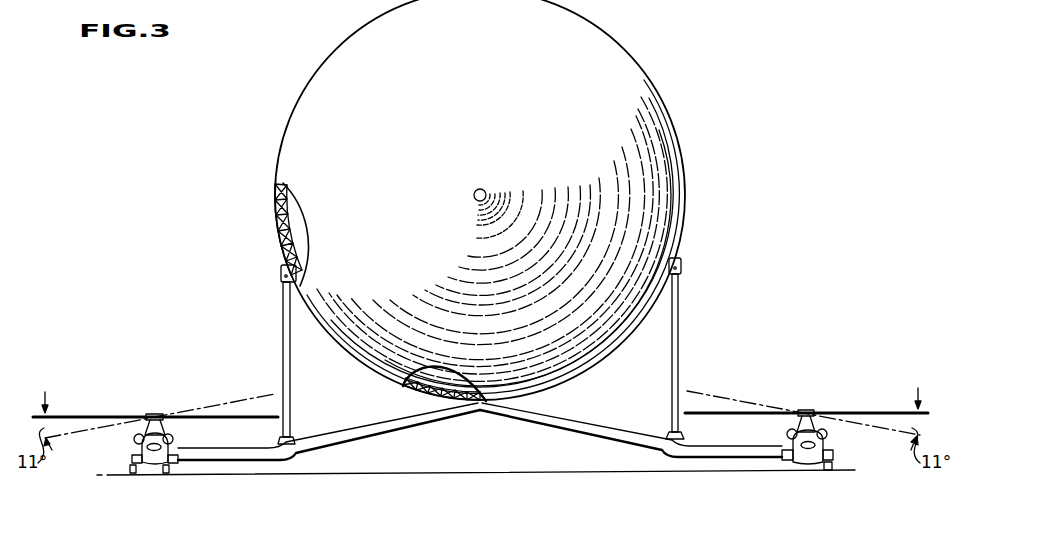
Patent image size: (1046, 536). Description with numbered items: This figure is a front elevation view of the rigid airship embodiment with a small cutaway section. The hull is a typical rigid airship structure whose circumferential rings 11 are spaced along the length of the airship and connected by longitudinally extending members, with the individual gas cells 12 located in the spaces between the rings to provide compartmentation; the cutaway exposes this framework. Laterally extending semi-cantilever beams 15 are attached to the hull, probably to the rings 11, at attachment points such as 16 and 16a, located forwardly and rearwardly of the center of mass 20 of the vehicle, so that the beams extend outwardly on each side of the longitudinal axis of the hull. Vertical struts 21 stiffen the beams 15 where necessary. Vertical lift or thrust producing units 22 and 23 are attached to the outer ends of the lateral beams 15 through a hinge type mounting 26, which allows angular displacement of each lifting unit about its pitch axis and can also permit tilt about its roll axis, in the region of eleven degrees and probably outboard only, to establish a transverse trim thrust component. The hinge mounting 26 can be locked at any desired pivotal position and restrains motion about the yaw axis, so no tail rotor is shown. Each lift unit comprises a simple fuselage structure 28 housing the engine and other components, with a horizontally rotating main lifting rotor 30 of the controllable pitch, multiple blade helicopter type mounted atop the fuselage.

The circumferential rings 11 is at (277, 197).
The gas cells 12 is at (300, 233).
The semi-cantilever beams 15 is at (358, 431).
The attachment point 16 is at (436, 408).
The attachment point 16a is at (281, 266).
The center of mass 20 is at (481, 188).
The vertical struts 21 is at (283, 352).
The vertical lift or thrust producing unit 22 is at (155, 412).
The vertical lift or thrust producing unit 23 is at (808, 408).
The hinge type mounting 26 is at (170, 466).
The fuselage structure 28 is at (139, 447).
The main lifting rotor 30 is at (108, 414).